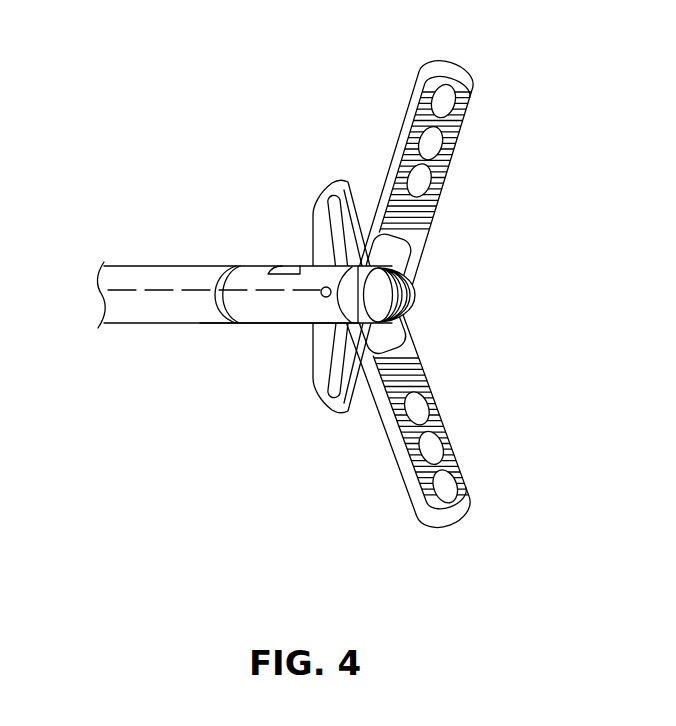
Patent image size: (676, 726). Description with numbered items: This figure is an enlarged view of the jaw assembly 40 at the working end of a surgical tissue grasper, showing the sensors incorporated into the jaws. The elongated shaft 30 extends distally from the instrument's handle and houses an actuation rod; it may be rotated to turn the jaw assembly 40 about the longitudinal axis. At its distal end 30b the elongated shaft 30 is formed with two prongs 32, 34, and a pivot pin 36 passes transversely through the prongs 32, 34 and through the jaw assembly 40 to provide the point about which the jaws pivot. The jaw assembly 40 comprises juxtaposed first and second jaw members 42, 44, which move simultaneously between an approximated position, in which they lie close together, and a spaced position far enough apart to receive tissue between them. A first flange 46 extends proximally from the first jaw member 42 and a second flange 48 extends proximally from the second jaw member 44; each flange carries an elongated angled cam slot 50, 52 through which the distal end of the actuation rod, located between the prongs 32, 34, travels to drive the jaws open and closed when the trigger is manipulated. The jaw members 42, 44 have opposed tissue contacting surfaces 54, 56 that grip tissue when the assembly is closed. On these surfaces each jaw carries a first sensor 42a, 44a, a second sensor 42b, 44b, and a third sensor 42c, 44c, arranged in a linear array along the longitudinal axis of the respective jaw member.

The elongated shaft 30 is at (120, 262).
The distal end 30b is at (247, 275).
The prong 32 is at (405, 294).
The prong 34 is at (274, 312).
The pivot pin 36 is at (324, 288).
The jaw assembly 40 is at (284, 102).
The first jaw member 42 is at (450, 147).
The first sensor 42a is at (418, 183).
The second sensor 42b is at (432, 145).
The third sensor 42c is at (446, 104).
The second jaw member 44 is at (440, 444).
The first sensor 44a is at (420, 408).
The second sensor 44b is at (432, 448).
The third sensor 44c is at (447, 488).
The first flange 46 is at (310, 400).
The second flange 48 is at (321, 190).
The cam slot 50 is at (322, 387).
The cam slot 52 is at (328, 201).
The tissue contacting surface 54 is at (424, 213).
The tissue contacting surface 56 is at (424, 370).